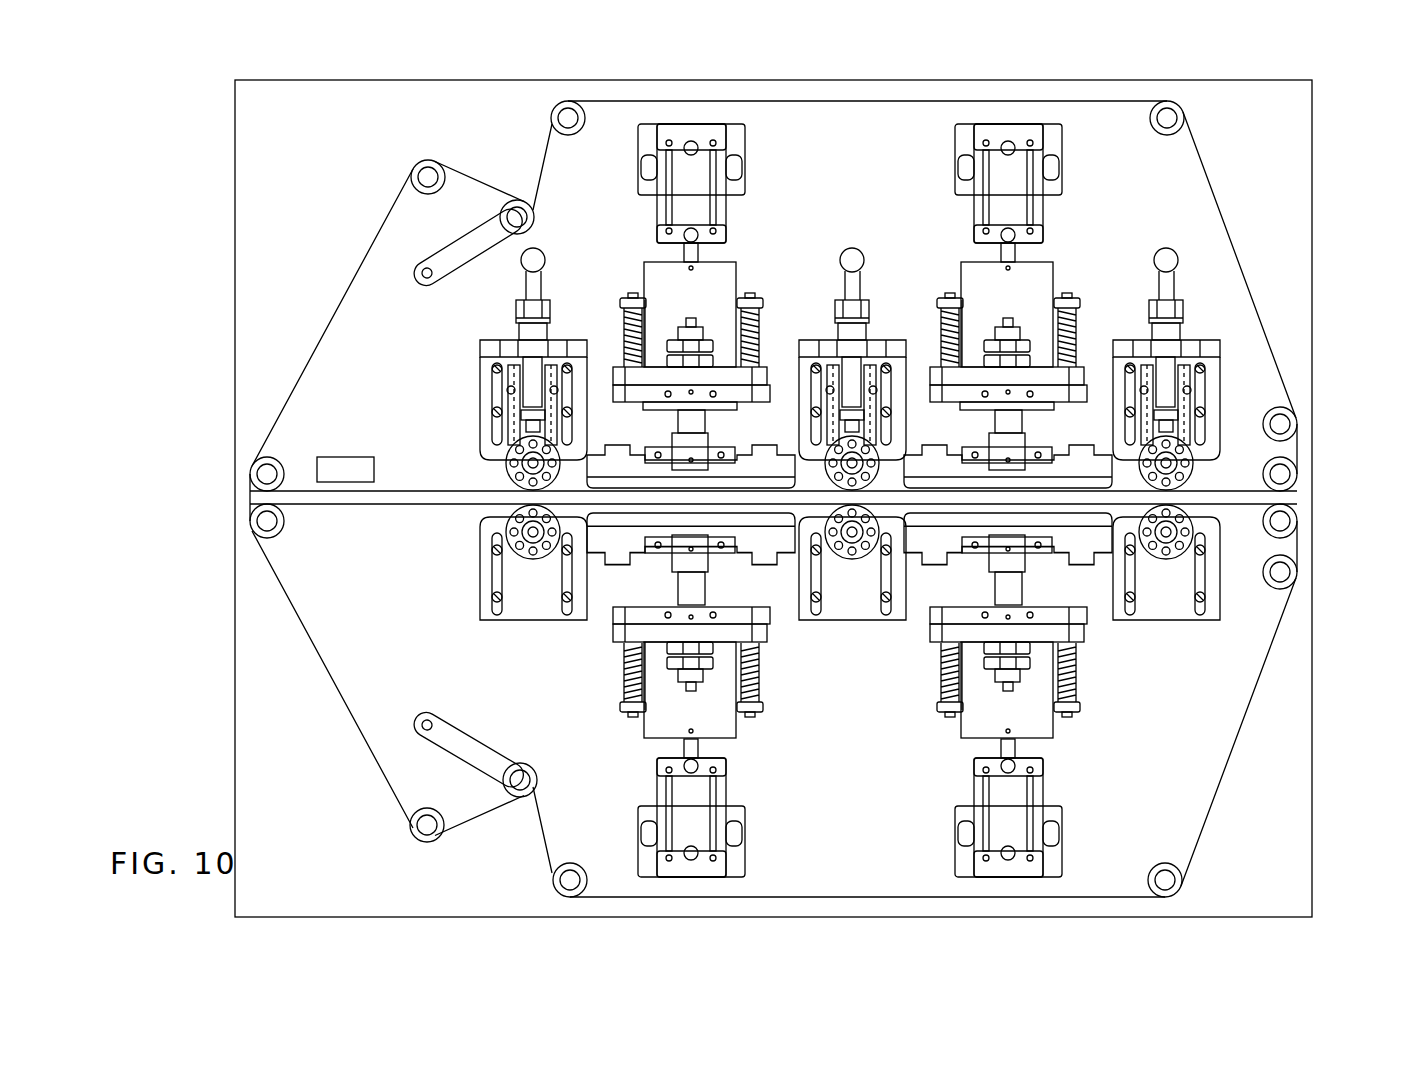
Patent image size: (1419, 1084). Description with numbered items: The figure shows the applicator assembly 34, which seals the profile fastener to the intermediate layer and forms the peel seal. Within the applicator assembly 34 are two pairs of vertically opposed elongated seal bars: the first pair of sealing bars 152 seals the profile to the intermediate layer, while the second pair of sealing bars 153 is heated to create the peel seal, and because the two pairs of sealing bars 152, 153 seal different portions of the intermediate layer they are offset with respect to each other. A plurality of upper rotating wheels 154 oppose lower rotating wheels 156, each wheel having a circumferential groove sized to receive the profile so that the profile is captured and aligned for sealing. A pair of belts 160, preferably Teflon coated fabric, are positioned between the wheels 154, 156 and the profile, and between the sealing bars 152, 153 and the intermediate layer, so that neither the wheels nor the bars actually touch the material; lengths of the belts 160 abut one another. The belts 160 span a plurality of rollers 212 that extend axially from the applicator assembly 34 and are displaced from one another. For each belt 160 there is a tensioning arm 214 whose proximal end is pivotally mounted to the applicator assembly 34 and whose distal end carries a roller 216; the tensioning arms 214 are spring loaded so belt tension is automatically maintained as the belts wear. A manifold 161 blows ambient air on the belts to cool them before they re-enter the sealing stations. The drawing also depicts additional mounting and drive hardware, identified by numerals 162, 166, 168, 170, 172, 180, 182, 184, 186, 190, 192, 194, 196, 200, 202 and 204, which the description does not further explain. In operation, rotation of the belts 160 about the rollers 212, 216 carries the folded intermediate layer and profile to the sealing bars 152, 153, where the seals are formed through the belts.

The applicator assembly 34 is at (1326, 160).
The first pair of sealing bars 152 is at (1090, 455).
The second pair of sealing bars 153 is at (772, 455).
The upper rotating wheels 154 is at (508, 478).
The lower rotating wheels 156 is at (508, 518).
The belts 160 is at (333, 314).
The manifold 161 is at (350, 455).
The mounting bracket 162 is at (487, 395).
The fasteners 166 is at (572, 366).
The knob 168 is at (546, 265).
The handle 170 is at (487, 352).
The shaft 172 is at (528, 400).
The cylinder 180 is at (728, 215).
The cylinder mount 182 is at (748, 160).
The block 184 is at (722, 268).
The plate 186 is at (640, 393).
The slide block 190 is at (712, 448).
The post 192 is at (680, 428).
The nut 194 is at (700, 350).
The adjustment nut 196 is at (676, 342).
The slot 200 is at (650, 350).
The bolt 202 is at (628, 298).
The spring 204 is at (622, 312).
The rollers 212 is at (556, 108).
The tensioning arm 214 is at (445, 258).
The roller 216 is at (530, 215).